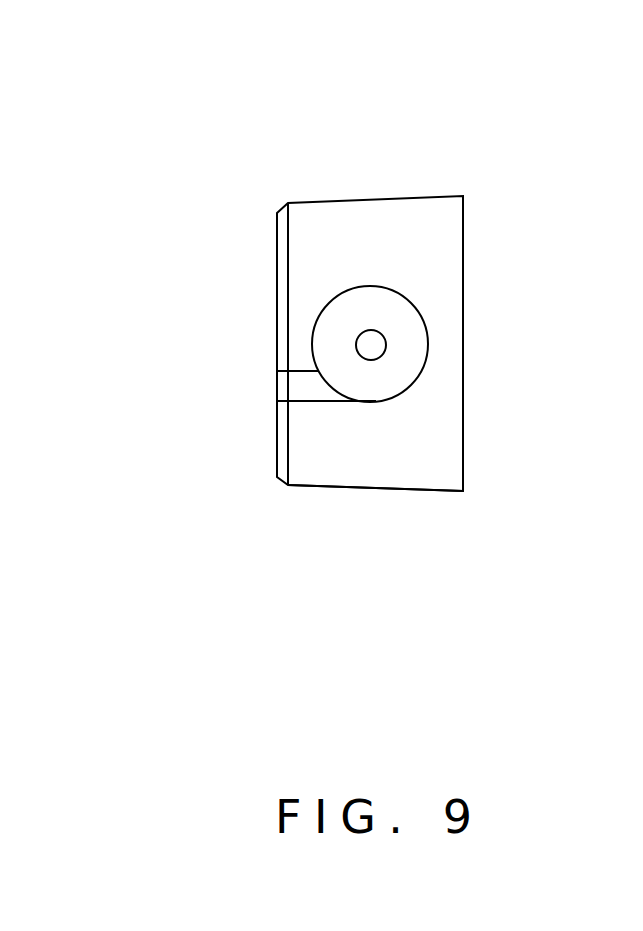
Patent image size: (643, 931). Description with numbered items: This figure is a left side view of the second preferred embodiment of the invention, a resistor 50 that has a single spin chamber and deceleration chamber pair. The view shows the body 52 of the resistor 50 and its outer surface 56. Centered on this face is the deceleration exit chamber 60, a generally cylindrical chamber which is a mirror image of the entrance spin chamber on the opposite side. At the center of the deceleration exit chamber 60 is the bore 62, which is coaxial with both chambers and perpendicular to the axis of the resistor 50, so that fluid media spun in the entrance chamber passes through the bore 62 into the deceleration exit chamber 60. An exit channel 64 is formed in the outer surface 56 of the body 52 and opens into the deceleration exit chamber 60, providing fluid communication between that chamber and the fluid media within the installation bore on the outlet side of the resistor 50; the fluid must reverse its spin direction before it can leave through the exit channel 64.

The resistor 50 is at (359, 335).
The body 52 is at (339, 473).
The outer surface 56 is at (412, 490).
The deceleration exit chamber 60 is at (405, 328).
The bore 62 is at (390, 348).
The exit channel 64 is at (290, 385).